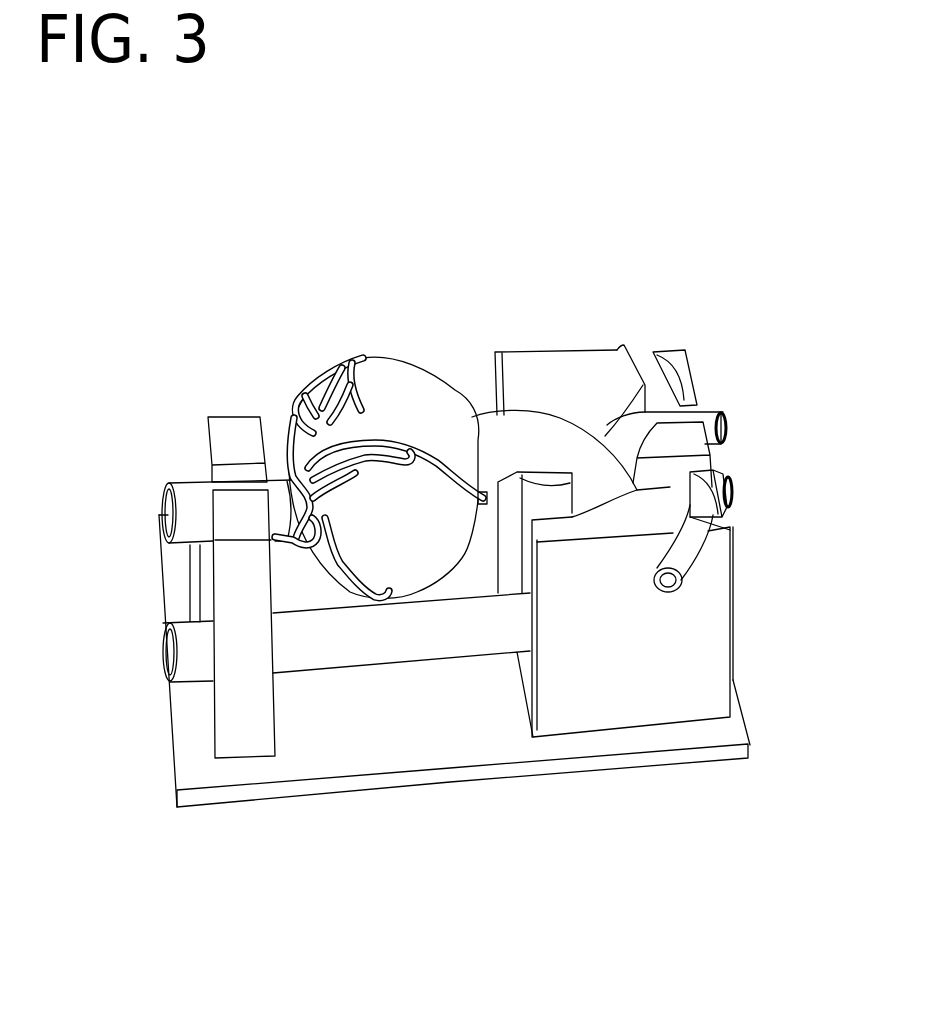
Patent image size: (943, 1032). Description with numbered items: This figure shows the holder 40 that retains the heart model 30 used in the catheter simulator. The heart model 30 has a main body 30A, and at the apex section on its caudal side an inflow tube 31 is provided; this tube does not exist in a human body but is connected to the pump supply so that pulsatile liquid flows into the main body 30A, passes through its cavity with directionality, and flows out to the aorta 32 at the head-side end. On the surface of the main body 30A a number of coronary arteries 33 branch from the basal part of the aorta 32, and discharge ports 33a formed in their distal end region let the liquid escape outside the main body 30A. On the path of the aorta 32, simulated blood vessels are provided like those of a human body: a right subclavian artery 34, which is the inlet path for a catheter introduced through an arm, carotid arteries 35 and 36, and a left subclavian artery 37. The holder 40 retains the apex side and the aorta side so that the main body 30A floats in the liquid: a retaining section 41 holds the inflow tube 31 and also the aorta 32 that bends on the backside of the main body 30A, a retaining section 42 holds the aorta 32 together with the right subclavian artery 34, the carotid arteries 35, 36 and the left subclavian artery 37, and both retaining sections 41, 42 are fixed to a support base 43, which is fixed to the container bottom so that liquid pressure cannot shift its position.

The holder 40 is at (282, 208).
The heart model 30 is at (396, 347).
The main body 30A is at (431, 388).
The inflow tube 31 is at (164, 489).
The aorta 32 is at (495, 452).
The coronary arteries 33 is at (348, 356).
The discharge ports 33a is at (313, 384).
The right subclavian artery 34 is at (616, 340).
The carotid artery 35 is at (727, 424).
The carotid artery 36 is at (733, 490).
The left subclavian artery 37 is at (688, 558).
The retaining section 41 is at (231, 424).
The retaining section 42 is at (537, 357).
The support base 43 is at (372, 790).